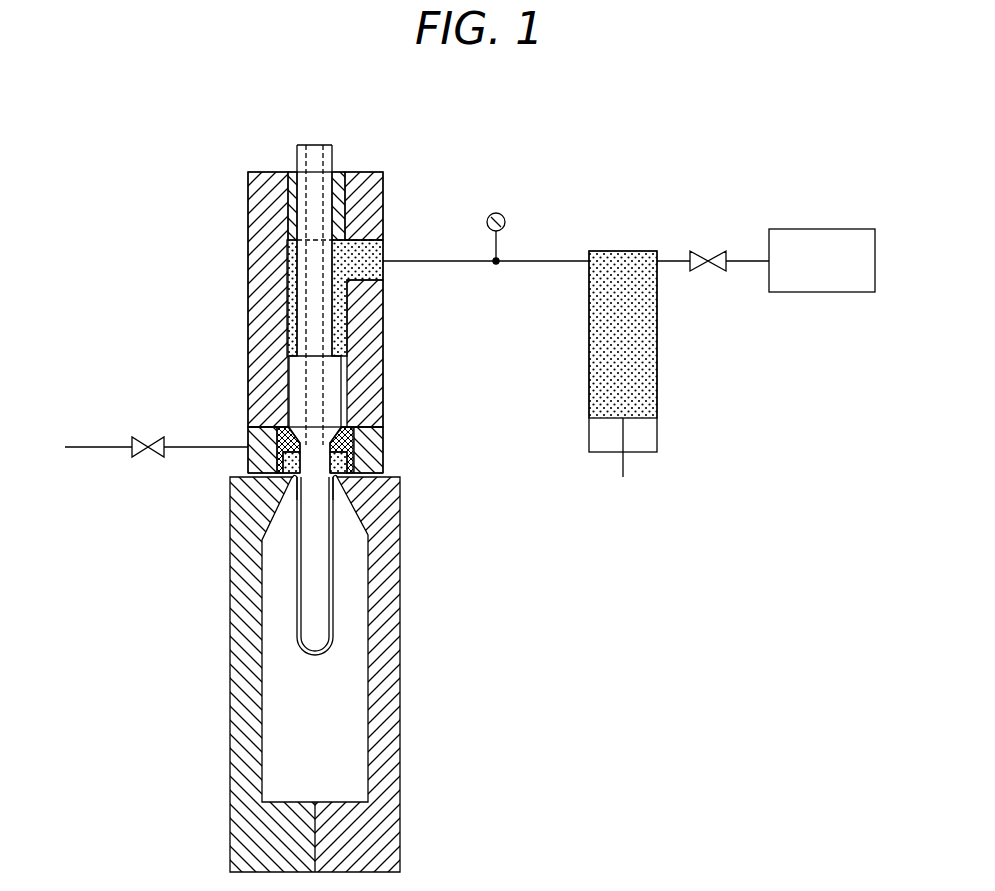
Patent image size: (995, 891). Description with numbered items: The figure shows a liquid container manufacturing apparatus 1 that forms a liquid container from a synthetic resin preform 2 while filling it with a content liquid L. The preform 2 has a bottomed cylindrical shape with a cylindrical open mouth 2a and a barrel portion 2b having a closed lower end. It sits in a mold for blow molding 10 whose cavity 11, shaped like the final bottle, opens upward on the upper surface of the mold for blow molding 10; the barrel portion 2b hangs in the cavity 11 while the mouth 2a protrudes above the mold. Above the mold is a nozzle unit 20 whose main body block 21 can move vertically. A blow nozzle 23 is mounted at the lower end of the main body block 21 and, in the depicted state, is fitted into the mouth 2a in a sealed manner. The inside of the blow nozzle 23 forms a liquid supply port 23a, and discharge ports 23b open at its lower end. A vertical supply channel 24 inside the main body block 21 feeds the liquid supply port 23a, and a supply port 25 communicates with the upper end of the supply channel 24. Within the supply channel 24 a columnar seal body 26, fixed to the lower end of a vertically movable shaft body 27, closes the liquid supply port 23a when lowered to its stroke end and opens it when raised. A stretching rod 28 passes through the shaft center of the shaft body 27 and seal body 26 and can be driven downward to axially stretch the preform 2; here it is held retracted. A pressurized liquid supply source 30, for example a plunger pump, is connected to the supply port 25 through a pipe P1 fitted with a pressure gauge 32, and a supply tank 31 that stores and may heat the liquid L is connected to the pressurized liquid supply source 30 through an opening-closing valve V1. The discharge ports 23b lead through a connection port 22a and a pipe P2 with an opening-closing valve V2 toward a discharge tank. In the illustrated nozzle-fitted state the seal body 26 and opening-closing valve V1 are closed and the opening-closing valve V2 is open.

The liquid container manufacturing apparatus 1 is at (447, 177).
The preform 2 is at (338, 572).
The mouth 2a is at (362, 470).
The barrel portion 2b is at (337, 610).
The mold for blow molding 10 is at (402, 692).
The cavity 11 is at (368, 703).
The nozzle unit 20 is at (320, 306).
The main body block 21 is at (265, 200).
The connection port 22a is at (248, 448).
The blow nozzle 23 is at (355, 430).
The liquid supply port 23a is at (342, 452).
The discharge port 23b is at (296, 490).
The supply channel 24 is at (290, 288).
The supply port 25 is at (375, 243).
The seal body 26 is at (332, 385).
The shaft body 27 is at (297, 162).
The stretching rod 28 is at (298, 528).
The pressurized liquid supply source 30 is at (660, 380).
The supply tank 31 is at (835, 274).
The pressure gauge 32 is at (503, 215).
The pipe P1 is at (540, 261).
The pipe P2 is at (80, 447).
The opening-closing valve V1 is at (708, 250).
The opening-closing valve V2 is at (143, 458).
The liquid L is at (604, 356).